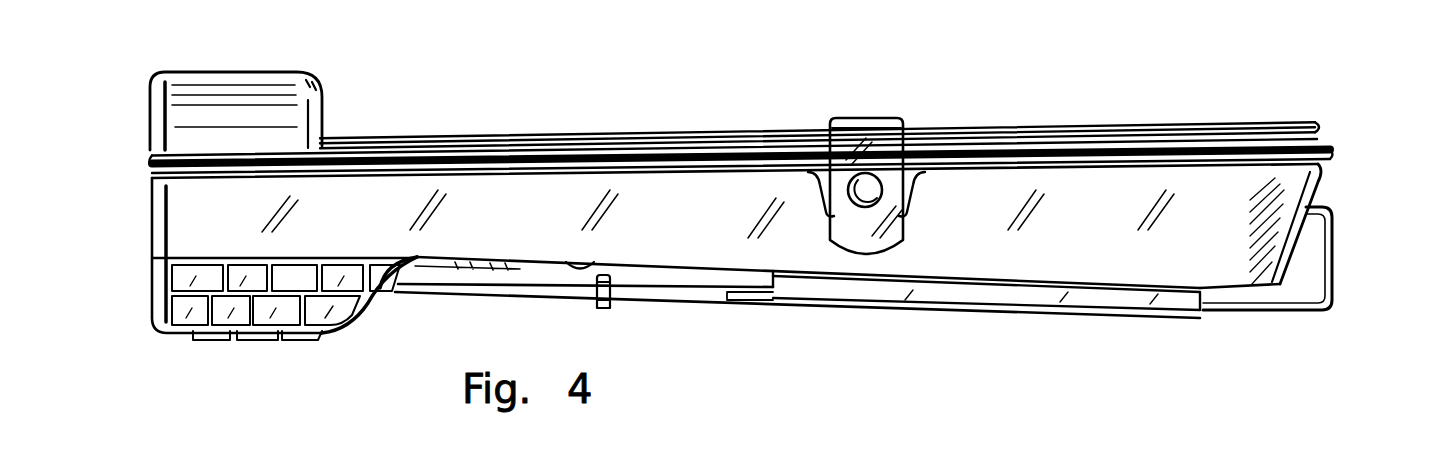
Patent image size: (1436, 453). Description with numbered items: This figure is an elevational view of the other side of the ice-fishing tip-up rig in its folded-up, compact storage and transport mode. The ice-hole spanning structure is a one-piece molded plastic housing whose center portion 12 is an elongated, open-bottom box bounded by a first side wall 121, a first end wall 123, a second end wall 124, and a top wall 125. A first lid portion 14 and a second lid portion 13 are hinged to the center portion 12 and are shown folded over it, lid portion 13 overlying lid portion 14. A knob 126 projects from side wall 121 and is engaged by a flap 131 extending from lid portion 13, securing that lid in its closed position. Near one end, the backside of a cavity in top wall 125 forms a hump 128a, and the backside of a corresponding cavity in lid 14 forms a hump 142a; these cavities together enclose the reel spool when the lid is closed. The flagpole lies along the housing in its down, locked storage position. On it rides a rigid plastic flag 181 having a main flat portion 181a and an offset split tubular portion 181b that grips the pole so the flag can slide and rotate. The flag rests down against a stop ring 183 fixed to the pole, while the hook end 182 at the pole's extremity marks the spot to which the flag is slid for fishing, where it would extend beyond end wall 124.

The center portion 12 is at (490, 197).
The second lid portion 13 is at (1068, 125).
The first lid portion 14 is at (986, 132).
The first side wall 121 is at (200, 206).
The first end wall 123 is at (148, 261).
The second end wall 124 is at (1316, 190).
The top wall 125 is at (585, 262).
The knob 126 is at (880, 188).
The hump 128a is at (303, 333).
The flap 131 is at (893, 232).
The hump 142a is at (266, 72).
The flag 181 is at (835, 310).
The main flat portion 181a is at (913, 293).
The split tubular portion 181b is at (673, 290).
The hook end 182 is at (1336, 264).
The stop ring 183 is at (600, 305).